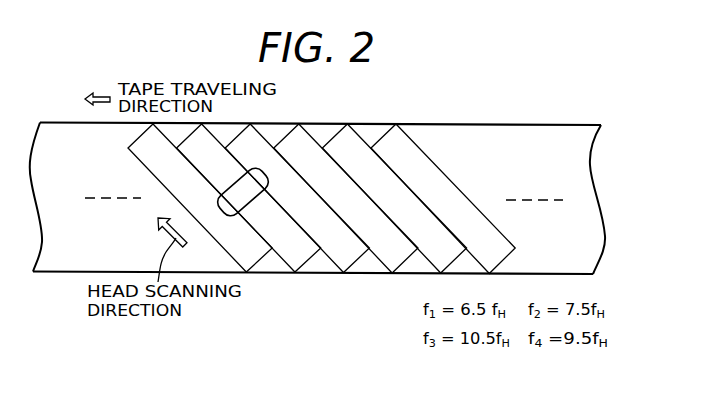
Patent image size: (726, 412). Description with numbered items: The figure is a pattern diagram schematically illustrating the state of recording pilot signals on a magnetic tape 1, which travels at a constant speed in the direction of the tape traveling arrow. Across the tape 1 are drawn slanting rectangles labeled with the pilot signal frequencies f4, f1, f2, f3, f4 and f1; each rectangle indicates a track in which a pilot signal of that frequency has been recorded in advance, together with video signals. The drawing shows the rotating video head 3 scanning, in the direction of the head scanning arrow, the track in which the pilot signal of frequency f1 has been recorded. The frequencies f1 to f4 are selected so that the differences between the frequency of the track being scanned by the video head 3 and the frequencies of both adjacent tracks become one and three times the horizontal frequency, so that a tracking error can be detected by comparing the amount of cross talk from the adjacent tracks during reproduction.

The magnetic tape 1 is at (462, 124).
The rotating video head 3 is at (249, 203).
The pilot signal frequency f1 is at (346, 199).
The pilot signal frequency f2 is at (297, 198).
The pilot signal frequency f3 is at (346, 198).
The pilot signal frequency f4 is at (297, 198).